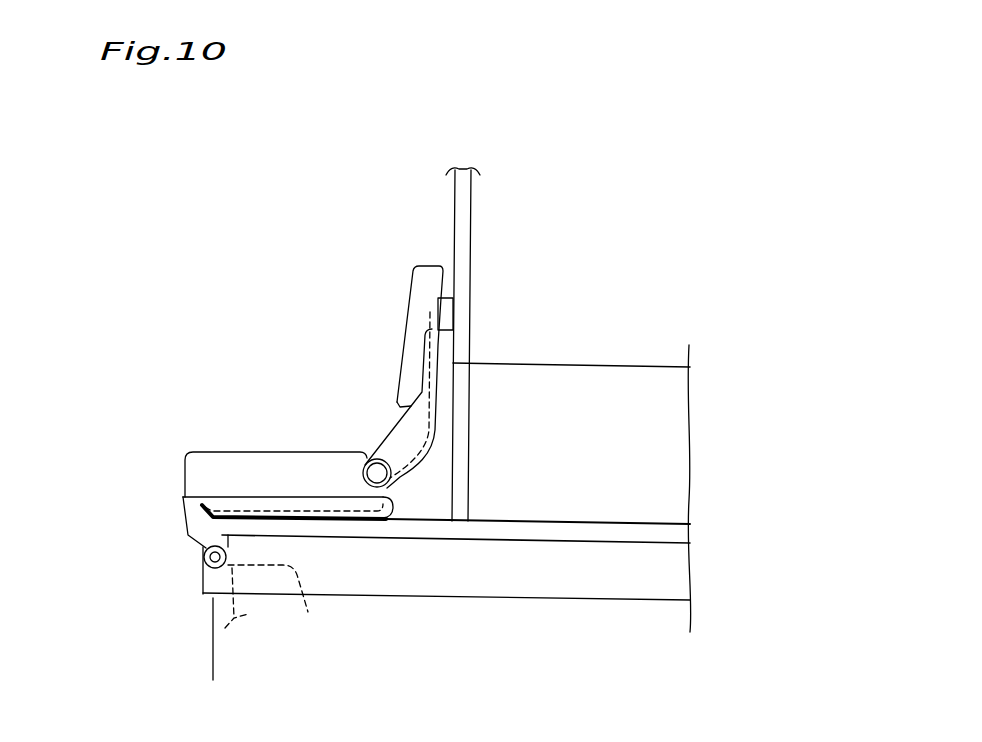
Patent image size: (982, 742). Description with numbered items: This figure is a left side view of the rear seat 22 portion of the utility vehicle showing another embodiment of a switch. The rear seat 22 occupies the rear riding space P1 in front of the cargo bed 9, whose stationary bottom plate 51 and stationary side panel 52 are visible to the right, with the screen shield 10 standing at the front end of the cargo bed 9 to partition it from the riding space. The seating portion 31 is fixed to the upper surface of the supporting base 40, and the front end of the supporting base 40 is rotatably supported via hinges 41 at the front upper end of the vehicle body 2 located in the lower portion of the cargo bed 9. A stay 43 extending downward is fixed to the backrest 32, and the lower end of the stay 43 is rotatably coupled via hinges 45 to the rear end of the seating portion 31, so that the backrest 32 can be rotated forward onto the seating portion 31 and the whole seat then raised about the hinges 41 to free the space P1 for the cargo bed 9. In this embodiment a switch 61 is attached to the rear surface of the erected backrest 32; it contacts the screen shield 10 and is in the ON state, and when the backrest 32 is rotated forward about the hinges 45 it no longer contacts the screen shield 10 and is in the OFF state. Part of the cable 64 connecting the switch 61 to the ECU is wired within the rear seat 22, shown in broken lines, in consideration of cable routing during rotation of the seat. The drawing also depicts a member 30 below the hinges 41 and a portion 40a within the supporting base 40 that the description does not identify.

The rear riding space P1 is at (313, 226).
The vehicle body 2 is at (590, 575).
The cargo bed 9 is at (712, 355).
The screen shield 10 is at (472, 245).
The rear seat 22 is at (320, 378).
The leg 30 is at (265, 637).
The seating portion 31 is at (248, 452).
The backrest 32 is at (424, 262).
The supporting base 40 is at (192, 533).
The frame inner member 40a is at (247, 502).
The hinges 41 is at (203, 580).
The stays 43 is at (403, 432).
The hinges 45 is at (386, 478).
The stationary bottom plate 51 is at (686, 532).
The stationary side panels 52 is at (593, 367).
The switch 61 is at (445, 313).
The cable 64 is at (309, 614).